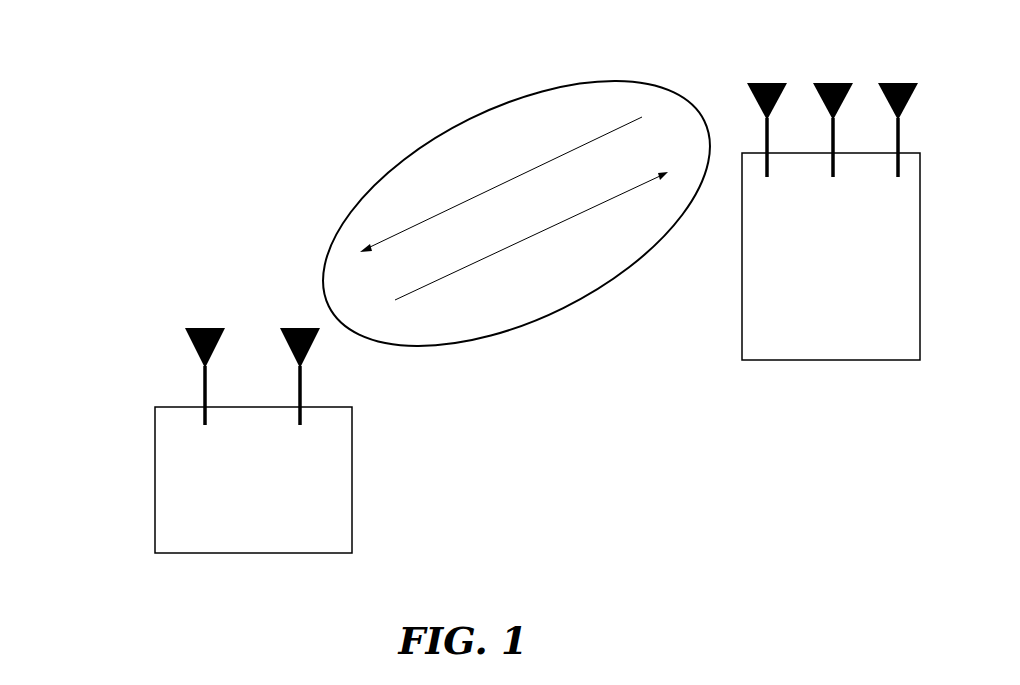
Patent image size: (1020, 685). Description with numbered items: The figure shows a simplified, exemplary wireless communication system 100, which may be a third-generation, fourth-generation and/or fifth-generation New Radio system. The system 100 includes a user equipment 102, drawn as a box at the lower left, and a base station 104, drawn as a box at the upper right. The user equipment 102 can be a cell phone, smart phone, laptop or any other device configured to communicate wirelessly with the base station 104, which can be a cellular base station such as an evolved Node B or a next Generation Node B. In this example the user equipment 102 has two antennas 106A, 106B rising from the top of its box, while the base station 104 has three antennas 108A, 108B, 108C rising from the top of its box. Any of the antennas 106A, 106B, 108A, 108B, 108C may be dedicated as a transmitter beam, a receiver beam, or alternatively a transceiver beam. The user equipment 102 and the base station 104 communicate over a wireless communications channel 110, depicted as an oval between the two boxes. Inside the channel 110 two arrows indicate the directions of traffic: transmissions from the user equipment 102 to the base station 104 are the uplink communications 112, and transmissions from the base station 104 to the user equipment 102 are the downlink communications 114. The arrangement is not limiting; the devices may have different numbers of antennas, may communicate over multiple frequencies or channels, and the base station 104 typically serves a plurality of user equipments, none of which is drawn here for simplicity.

The wireless communication system 100 is at (158, 55).
The user equipment 102 is at (274, 515).
The base station 104 is at (809, 288).
The antenna 106A is at (192, 345).
The antenna 106B is at (288, 342).
The antenna 108A is at (762, 82).
The antenna 108B is at (823, 82).
The antenna 108C is at (897, 82).
The wireless communications channel 110 is at (483, 107).
The uplink communications 112 is at (531, 236).
The downlink communications 114 is at (501, 184).